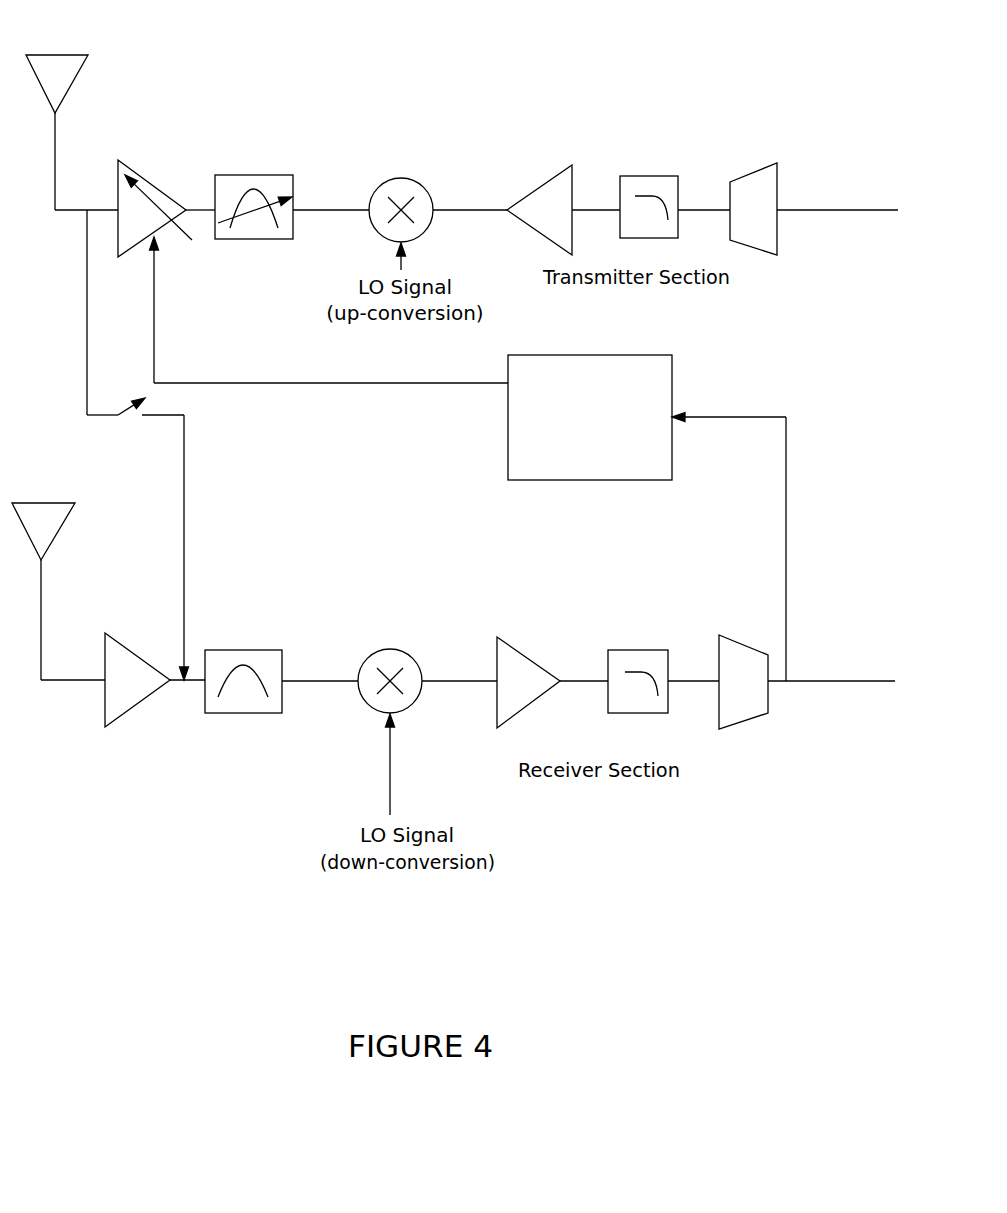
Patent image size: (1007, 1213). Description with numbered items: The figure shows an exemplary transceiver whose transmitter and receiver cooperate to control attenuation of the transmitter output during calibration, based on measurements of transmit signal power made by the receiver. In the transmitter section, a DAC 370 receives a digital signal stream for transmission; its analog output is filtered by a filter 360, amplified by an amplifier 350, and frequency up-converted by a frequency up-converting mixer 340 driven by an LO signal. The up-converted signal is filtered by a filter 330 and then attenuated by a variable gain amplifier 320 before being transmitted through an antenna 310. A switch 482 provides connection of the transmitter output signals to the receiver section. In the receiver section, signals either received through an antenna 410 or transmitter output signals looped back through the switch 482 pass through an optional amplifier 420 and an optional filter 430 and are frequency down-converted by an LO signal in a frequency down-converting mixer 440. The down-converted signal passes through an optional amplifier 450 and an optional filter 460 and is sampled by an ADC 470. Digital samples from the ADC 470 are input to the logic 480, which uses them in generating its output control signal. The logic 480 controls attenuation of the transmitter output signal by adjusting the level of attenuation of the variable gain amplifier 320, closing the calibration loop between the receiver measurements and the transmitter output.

The antenna 310 is at (92, 66).
The variable gain amplifier 320 is at (169, 156).
The filter 330 is at (243, 172).
The frequency up-converting mixer 340 is at (392, 175).
The amplifier 350 is at (554, 178).
The filter 360 is at (647, 169).
The DAC 370 is at (757, 172).
The antenna 410 is at (68, 516).
The amplifier 420 is at (121, 647).
The filter 430 is at (280, 717).
The frequency down-converting mixer 440 is at (382, 645).
The amplifier 450 is at (514, 652).
The filter 460 is at (636, 642).
The ADC 470 is at (747, 647).
The logic 480 is at (563, 452).
The switch 482 is at (128, 441).